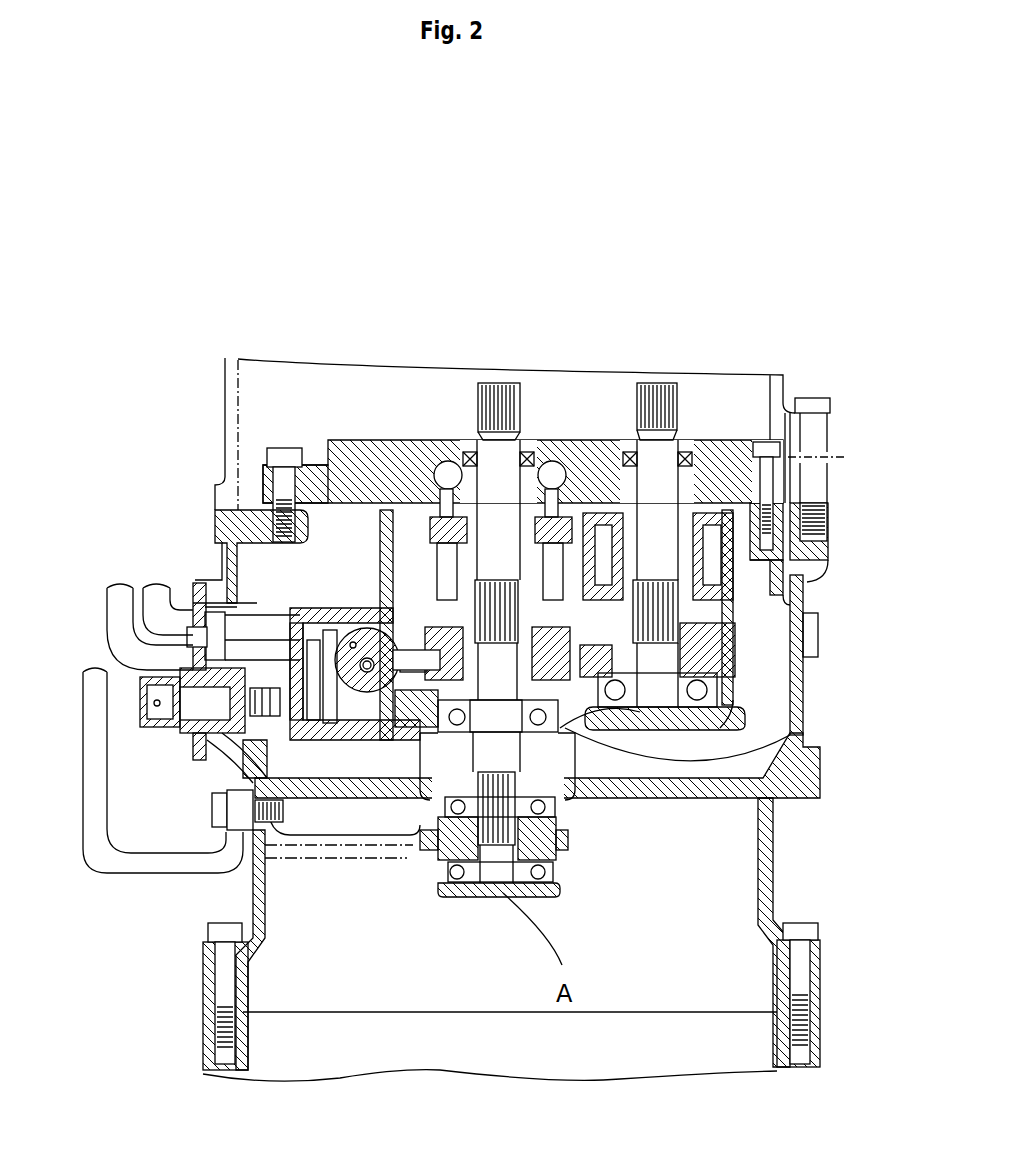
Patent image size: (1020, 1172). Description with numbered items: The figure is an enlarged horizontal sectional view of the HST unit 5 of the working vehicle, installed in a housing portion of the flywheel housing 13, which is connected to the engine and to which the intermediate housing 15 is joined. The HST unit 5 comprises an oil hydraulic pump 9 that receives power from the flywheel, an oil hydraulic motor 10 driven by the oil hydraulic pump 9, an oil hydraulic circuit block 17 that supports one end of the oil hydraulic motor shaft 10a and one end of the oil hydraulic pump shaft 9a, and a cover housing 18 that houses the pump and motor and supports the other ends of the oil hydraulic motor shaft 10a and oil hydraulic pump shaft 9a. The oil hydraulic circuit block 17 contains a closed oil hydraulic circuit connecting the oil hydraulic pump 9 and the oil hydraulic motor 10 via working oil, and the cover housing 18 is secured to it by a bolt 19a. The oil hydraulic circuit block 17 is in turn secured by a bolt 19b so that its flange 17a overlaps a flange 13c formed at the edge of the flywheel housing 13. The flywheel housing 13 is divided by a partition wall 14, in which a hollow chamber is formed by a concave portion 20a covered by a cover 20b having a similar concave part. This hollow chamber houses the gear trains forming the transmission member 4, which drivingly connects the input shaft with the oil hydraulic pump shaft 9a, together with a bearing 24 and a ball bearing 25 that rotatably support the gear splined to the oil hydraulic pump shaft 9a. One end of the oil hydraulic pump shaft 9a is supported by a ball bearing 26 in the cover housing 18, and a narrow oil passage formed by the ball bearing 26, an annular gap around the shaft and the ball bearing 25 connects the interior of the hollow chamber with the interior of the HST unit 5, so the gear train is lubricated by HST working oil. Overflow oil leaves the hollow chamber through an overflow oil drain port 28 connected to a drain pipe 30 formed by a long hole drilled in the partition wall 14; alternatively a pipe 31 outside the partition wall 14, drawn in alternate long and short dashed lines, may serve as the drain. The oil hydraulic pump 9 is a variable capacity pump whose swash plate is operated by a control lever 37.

The transmission member 4 is at (435, 845).
The HST unit 5 is at (772, 668).
The oil hydraulic pump 9 is at (410, 552).
The oil hydraulic pump shaft 9a is at (497, 383).
The oil hydraulic motor 10 is at (742, 592).
The oil hydraulic motor shaft 10a is at (651, 383).
The flywheel housing 13 is at (784, 869).
The flange 13c is at (230, 565).
The partition wall 14 is at (775, 833).
The intermediate housing 15 is at (223, 439).
The oil hydraulic circuit block 17 is at (385, 468).
The flange 17a is at (330, 440).
The cover housing 18 is at (757, 632).
The bolt 19a is at (766, 440).
The bolt 19b is at (278, 447).
The concave portion 20a is at (570, 845).
The cover 20b is at (475, 895).
The bearing 24 is at (560, 863).
The ball bearing 25 is at (577, 798).
The ball bearing 26 is at (770, 745).
The overflow oil drain port 28 is at (412, 808).
The drain pipe 30 is at (315, 765).
The pipe 31 is at (328, 857).
The control lever 37 is at (145, 695).